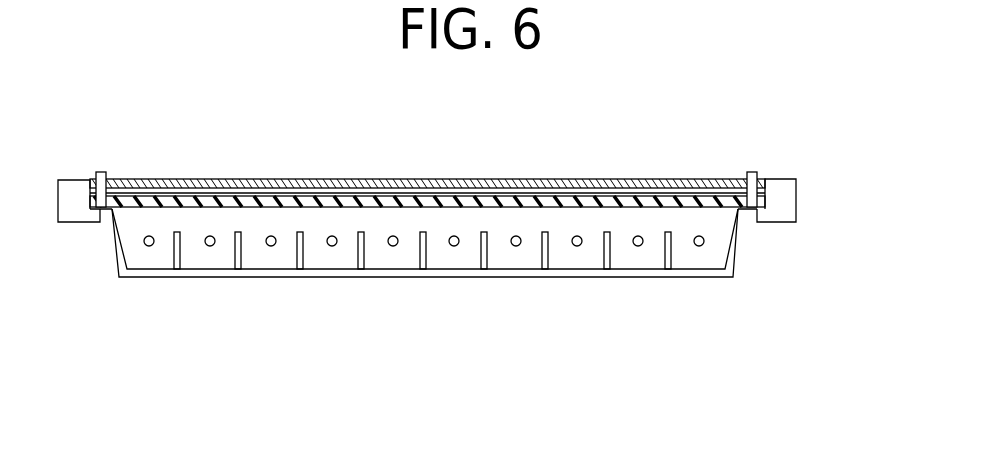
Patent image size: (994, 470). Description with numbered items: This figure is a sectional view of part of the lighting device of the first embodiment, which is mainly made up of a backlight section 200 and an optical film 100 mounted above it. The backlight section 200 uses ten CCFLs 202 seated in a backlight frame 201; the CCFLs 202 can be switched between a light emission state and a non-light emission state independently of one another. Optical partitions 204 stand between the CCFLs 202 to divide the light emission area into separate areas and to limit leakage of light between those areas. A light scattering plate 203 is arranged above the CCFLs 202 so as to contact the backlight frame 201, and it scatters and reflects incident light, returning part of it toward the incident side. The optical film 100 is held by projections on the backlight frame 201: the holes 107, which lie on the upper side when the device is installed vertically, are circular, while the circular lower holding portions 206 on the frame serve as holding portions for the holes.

The optical film 100 is at (503, 178).
The holes 107 is at (753, 172).
The backlight section 200 is at (543, 392).
The backlight frame 201 is at (237, 276).
The CCFLs 202 is at (336, 248).
The light scattering plate 203 is at (372, 206).
The optical partitions 204 is at (485, 240).
The lower holding portions 206 is at (752, 207).